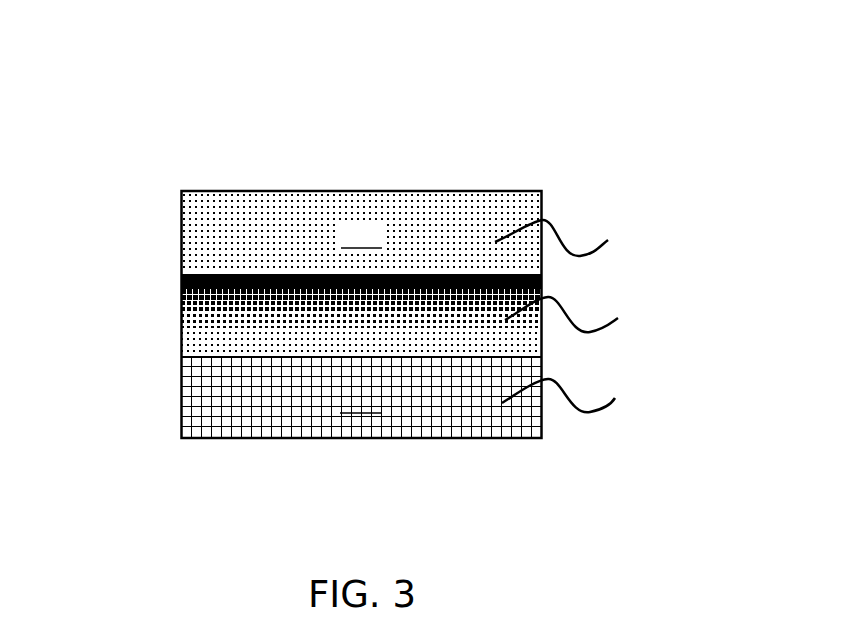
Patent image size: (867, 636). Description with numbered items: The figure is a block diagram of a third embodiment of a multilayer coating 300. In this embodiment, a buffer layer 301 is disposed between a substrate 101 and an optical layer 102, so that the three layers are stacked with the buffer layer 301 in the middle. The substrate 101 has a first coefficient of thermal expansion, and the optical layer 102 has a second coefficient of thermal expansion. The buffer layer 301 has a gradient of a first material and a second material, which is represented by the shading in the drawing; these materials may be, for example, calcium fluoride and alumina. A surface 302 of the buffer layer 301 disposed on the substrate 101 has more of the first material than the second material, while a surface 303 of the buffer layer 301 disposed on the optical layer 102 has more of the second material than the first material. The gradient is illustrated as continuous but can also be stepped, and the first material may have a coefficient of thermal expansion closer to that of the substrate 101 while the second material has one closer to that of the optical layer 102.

The multilayer coating 300 is at (483, 128).
The optical layer 102 is at (431, 231).
The substrate 101 is at (434, 397).
The buffer layer 301 is at (197, 318).
The surface of the buffer layer 302 is at (208, 357).
The surface of the buffer layer 303 is at (186, 273).